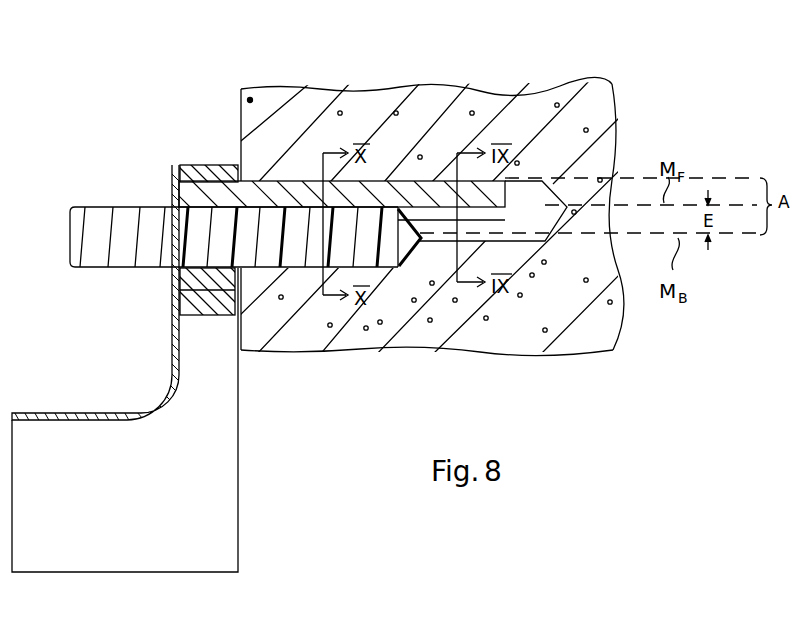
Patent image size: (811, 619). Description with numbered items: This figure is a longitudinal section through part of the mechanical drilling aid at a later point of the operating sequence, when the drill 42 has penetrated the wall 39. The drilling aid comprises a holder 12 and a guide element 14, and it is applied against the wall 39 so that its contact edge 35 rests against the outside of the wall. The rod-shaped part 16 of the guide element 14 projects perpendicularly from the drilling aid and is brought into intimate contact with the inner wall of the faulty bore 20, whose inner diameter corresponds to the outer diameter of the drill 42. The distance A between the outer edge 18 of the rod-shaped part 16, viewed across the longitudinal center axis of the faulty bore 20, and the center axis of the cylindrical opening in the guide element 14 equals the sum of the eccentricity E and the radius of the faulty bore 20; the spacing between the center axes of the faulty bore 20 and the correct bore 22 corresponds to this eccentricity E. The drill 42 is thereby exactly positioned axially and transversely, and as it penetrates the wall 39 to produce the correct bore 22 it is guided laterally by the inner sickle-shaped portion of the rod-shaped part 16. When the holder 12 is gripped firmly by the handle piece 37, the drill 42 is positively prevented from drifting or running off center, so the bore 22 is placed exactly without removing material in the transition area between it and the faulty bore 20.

The holder 12 is at (192, 164).
The guide element 14 is at (178, 300).
The rod-shaped part 16 is at (283, 192).
The outer edge 18 is at (745, 178).
The faulty bore 20 is at (536, 190).
The bore 22 is at (393, 276).
The contact edge 35 is at (240, 392).
The handle piece 37 is at (226, 458).
The wall 39 is at (306, 100).
The drill 42 is at (128, 222).